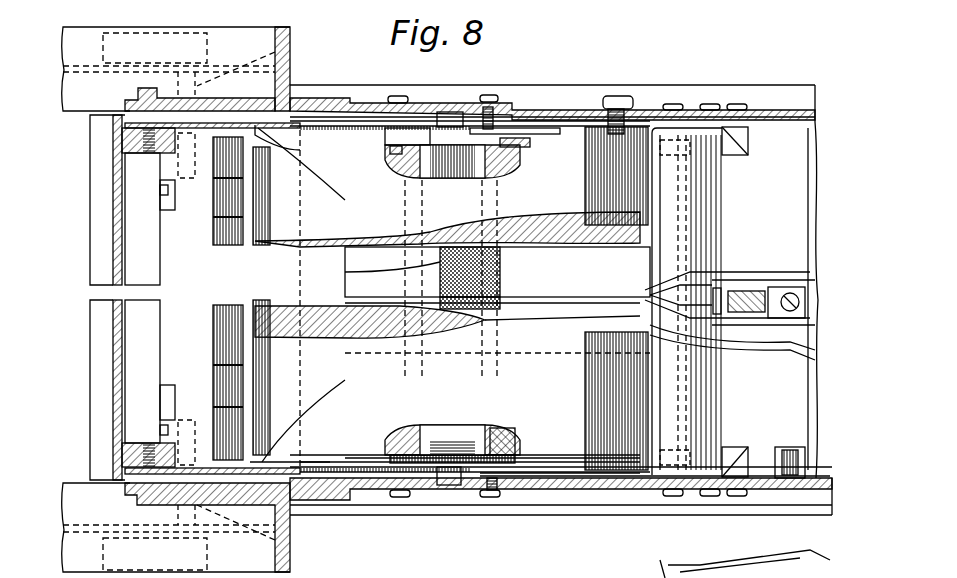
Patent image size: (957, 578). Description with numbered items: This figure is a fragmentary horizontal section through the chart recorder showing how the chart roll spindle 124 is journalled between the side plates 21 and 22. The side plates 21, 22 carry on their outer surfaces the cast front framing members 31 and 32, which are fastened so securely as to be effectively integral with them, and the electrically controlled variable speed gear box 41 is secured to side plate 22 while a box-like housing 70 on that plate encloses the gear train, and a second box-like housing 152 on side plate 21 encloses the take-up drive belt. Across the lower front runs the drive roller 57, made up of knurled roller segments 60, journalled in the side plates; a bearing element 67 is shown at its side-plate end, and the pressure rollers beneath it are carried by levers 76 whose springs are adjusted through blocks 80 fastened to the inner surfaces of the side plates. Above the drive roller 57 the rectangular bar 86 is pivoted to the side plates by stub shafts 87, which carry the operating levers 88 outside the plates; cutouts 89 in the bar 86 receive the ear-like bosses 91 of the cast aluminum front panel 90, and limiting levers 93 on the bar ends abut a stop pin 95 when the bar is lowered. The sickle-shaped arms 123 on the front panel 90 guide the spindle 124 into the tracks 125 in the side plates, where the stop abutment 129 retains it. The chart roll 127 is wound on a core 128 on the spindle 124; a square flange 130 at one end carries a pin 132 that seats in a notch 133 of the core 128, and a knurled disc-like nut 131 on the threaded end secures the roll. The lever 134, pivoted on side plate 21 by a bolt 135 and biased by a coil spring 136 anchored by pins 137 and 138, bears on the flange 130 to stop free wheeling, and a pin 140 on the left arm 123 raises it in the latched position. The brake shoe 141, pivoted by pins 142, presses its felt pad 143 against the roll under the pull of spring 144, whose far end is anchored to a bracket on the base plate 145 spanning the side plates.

The side plate 21 is at (752, 112).
The side plate 22 is at (658, 490).
The front framing member 31 is at (75, 50).
The front framing member 32 is at (73, 520).
The variable speed gear box 41 is at (803, 367).
The drive roller 57 is at (245, 240).
The roller segments 60 is at (243, 367).
The bearing bushing 67 is at (805, 460).
The box-like housing 70 is at (475, 515).
The levers 76 is at (570, 458).
The blocks 80 is at (748, 140).
The rectangular bar 86 is at (165, 325).
The stub shafts 87 is at (292, 48).
The levers 88 is at (103, 44).
The cutouts 89 is at (160, 188).
The front panel 90 is at (108, 270).
The ear-like bosses 91 is at (170, 205).
The pivoting motion limiting levers 93 is at (258, 128).
The stop pin 95 is at (273, 475).
The sickle-shaped arms 123 is at (298, 108).
The spindle 124 is at (448, 110).
The tracks 125 is at (745, 575).
The chart roll 127 is at (580, 472).
The core 128 is at (492, 428).
The stop abutment 129 is at (440, 428).
The square flange 130 is at (392, 145).
The disc-like nut 131 is at (500, 482).
The pin 132 is at (390, 150).
The notch 133 is at (412, 175).
The lever 134 is at (560, 140).
The bolt 135 is at (645, 118).
The coil spring 136 is at (540, 128).
The pin 137 is at (512, 118).
The pin 138 is at (605, 95).
The pin 140 is at (262, 140).
The brake shoe 141 is at (660, 262).
The pins 142 is at (680, 135).
The felt pad 143 is at (345, 278).
The spring 144 is at (742, 292).
The base plate 145 is at (805, 305).
The box-like housing 152 is at (790, 90).